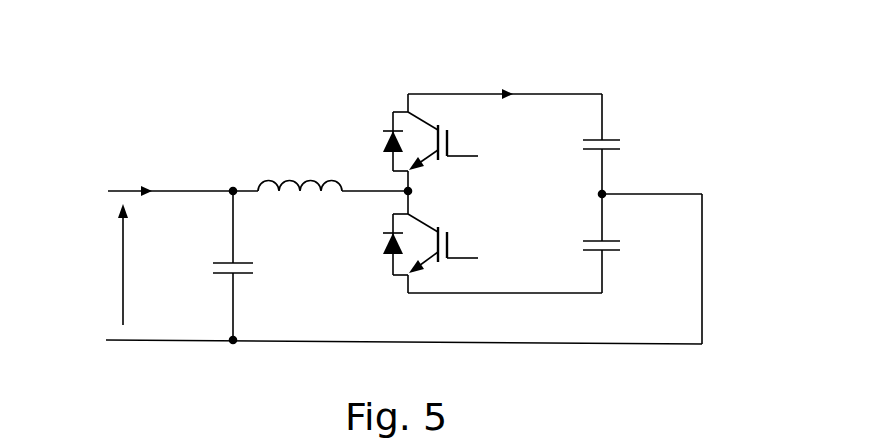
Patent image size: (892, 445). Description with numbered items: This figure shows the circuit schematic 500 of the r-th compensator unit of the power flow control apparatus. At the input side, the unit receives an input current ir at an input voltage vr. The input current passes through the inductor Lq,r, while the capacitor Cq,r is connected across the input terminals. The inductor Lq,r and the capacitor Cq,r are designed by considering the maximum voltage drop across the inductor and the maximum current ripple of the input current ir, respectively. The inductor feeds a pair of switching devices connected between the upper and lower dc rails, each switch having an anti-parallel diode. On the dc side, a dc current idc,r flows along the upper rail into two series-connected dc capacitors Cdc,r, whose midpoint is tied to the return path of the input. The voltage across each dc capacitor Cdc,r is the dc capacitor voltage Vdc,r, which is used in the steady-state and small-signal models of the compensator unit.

The circuit schematic 500 is at (674, 82).
The input current ir is at (183, 174).
The input voltage vr is at (101, 264).
The inductor Lq,r is at (300, 166).
The capacitor Cq,r is at (252, 265).
The dc current idc,r is at (505, 80).
The dc capacitor Cdc,r is at (627, 193).
The dc capacitor voltage Vdc,r is at (546, 198).